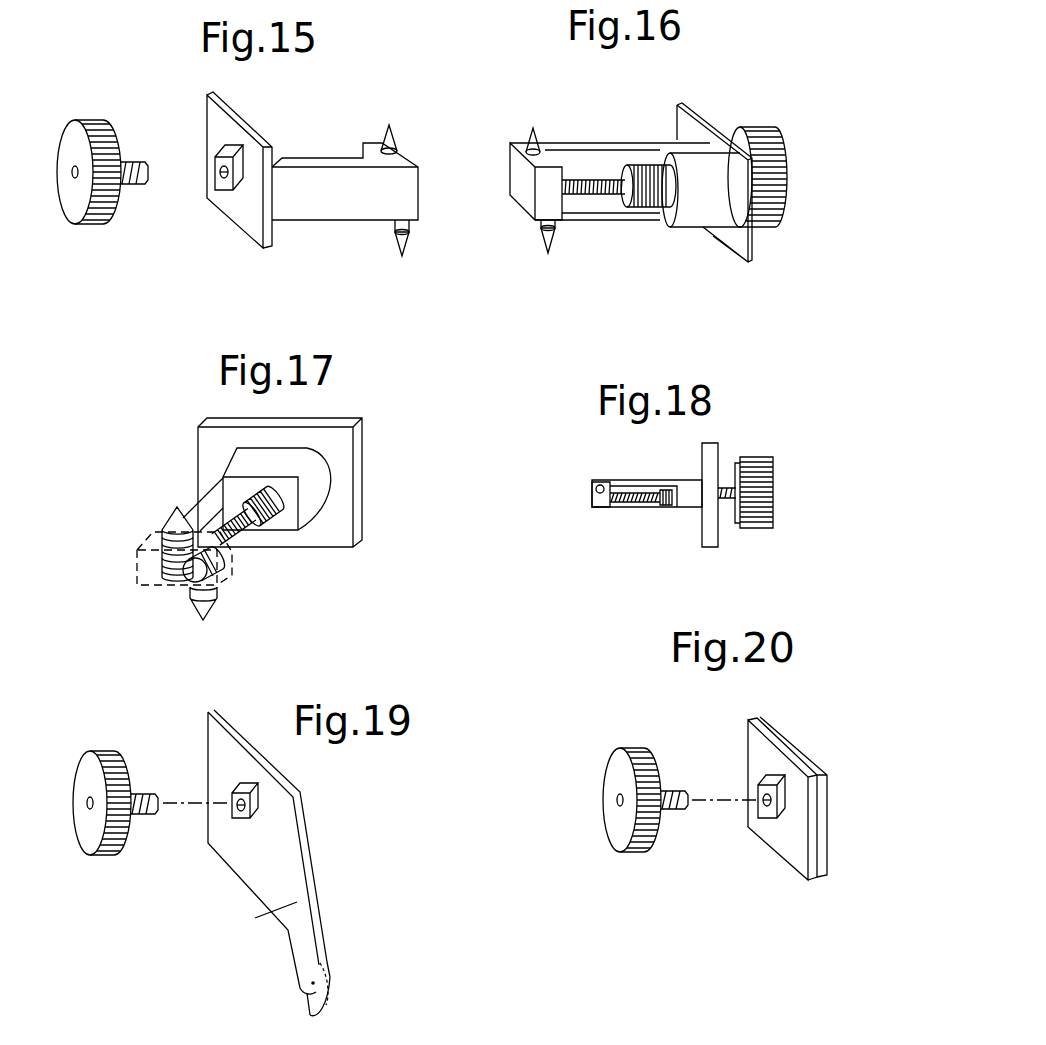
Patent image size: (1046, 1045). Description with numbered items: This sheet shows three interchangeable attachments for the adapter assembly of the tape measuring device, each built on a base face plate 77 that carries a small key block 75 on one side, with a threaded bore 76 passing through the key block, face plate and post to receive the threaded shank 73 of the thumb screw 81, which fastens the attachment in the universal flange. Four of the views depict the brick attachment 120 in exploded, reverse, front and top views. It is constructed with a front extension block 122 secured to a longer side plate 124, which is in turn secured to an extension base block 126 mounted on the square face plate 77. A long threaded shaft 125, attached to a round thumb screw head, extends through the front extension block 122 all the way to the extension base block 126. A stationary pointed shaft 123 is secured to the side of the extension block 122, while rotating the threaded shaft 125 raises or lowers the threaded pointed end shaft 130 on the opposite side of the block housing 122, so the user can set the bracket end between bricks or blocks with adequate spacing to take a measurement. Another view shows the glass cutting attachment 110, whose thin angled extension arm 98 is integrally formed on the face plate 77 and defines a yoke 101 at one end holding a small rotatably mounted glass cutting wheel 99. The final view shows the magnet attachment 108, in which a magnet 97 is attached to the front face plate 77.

In FIG. 15, the brick attachment 120 is at (210, 251).
In FIG. 16, the pointed end shaft 130 is at (531, 126).
In FIG. 17, the pointed end shaft 130 is at (170, 512).
In FIG. 18, the pointed end shaft 130 is at (592, 488).
In FIG. 16, the side plate 124 is at (602, 143).
In FIG. 16, the face plate 77 is at (700, 108).
In FIG. 18, the face plate 77 is at (710, 495).
In FIG. 20, the face plate 77 is at (790, 785).
In FIG. 16, the extension base block 126 is at (786, 162).
In FIG. 16, the extension block 122 is at (519, 208).
In FIG. 16, the pointed shaft 123 is at (545, 252).
In FIG. 17, the pointed shaft 123 is at (200, 620).
In FIG. 16, the threaded shaft 125 is at (594, 196).
In FIG. 18, the threaded shaft 125 is at (633, 505).
In FIG. 16, the glass cutting attachment 110 is at (670, 187).
In FIG. 17, the glass cutting attachment 110 is at (282, 534).
In FIG. 18, the glass cutting attachment 110 is at (701, 512).
In FIG. 19, the glass cutting attachment 110 is at (243, 852).
In FIG. 19, the thumb screw 81 is at (97, 752).
In FIG. 20, the thumb screw 81 is at (637, 752).
In FIG. 19, the threaded bore 76 is at (208, 770).
In FIG. 20, the threaded bore 76 is at (772, 822).
In FIG. 19, the threaded shank 73 is at (150, 795).
In FIG. 20, the threaded shank 73 is at (668, 790).
In FIG. 19, the key block 75 is at (212, 840).
In FIG. 20, the key block 75 is at (758, 790).
In FIG. 19, the extension arm 98 is at (255, 918).
In FIG. 19, the yoke 101 is at (312, 983).
In FIG. 19, the glass cutting wheel 99 is at (307, 1010).
In FIG. 20, the magnet 97 is at (825, 818).
In FIG. 20, the magnet attachment 108 is at (750, 804).